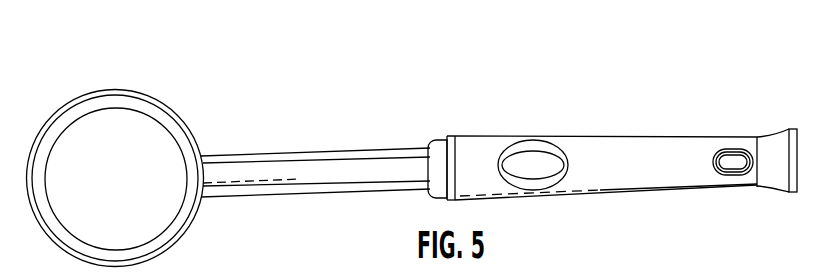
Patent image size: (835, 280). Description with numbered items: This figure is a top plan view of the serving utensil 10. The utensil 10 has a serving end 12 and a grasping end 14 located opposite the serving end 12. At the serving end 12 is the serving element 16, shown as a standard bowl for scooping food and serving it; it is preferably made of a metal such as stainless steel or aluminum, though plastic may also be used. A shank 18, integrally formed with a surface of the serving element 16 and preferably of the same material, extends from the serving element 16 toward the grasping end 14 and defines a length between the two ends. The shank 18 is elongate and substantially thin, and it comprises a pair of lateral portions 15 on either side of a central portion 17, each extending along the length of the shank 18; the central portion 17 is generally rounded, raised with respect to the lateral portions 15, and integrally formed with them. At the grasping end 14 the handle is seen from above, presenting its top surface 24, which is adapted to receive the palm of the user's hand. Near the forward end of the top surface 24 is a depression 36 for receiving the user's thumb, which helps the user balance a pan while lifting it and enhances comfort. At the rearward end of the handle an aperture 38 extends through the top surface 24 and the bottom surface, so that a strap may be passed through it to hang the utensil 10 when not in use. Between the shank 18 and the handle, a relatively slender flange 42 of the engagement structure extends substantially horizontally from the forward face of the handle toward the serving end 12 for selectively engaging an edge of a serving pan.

The serving utensil 10 is at (474, 78).
The serving end 12 is at (75, 75).
The grasping end 14 is at (755, 104).
The lateral portions 15 is at (320, 157).
The serving element 16 is at (165, 106).
The central portion 17 is at (358, 170).
The shank 18 is at (262, 166).
The top surface 24 is at (643, 176).
The depression 36 is at (525, 165).
The aperture 38 is at (735, 166).
The flange 42 is at (433, 143).